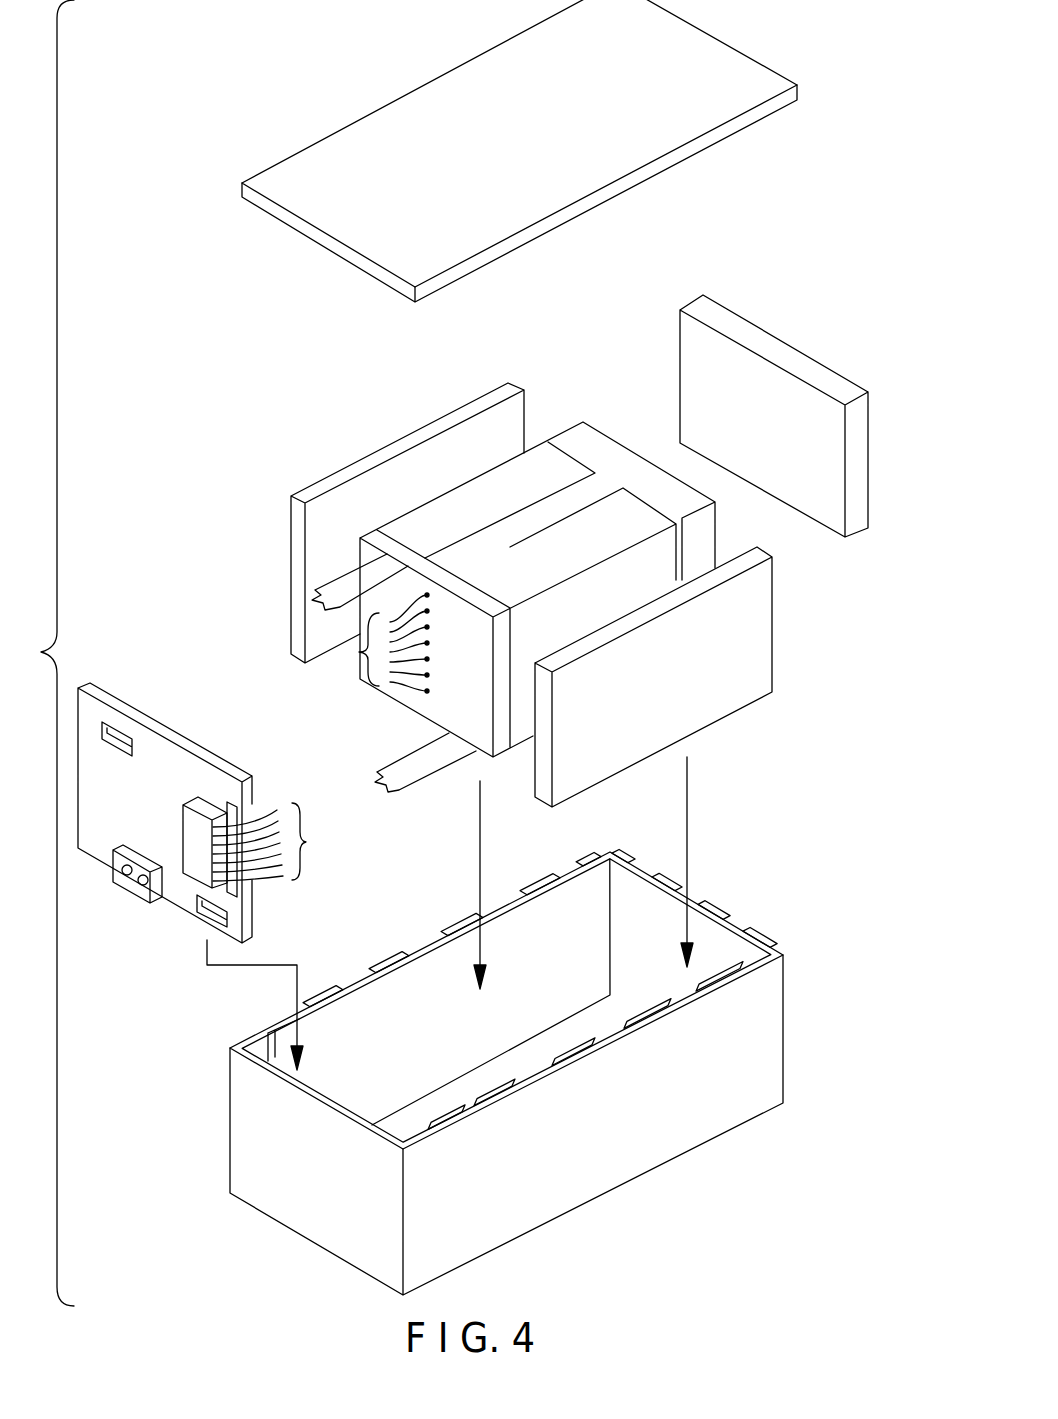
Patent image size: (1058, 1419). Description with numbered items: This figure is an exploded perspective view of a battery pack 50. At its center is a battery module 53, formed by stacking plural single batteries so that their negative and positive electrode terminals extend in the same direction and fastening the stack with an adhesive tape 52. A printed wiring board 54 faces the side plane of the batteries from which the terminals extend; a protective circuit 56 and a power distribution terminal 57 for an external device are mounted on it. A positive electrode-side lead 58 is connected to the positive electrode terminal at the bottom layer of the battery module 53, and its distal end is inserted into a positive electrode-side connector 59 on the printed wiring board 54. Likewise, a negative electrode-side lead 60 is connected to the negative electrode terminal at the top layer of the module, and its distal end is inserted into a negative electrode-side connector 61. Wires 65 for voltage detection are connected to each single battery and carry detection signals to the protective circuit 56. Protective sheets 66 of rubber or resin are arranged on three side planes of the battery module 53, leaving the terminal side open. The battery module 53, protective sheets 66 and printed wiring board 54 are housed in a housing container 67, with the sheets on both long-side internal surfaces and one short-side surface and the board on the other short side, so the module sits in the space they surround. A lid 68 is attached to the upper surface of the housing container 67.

The battery pack 50 is at (238, 92).
The adhesive tape 52 is at (552, 477).
The battery module 53 is at (640, 460).
The printed wiring board 54 is at (115, 678).
The protective circuit 56 is at (203, 801).
The power distribution terminal 57 is at (142, 889).
The positive electrode-side lead 58 is at (421, 768).
The positive electrode-side connector 59 is at (227, 918).
The negative electrode-side lead 60 is at (312, 601).
The negative electrode-side connector 61 is at (124, 732).
The wires for voltage detection 65 is at (357, 654).
The protective sheets 66 is at (365, 468).
The housing container 67 is at (768, 1037).
The lid 68 is at (732, 70).